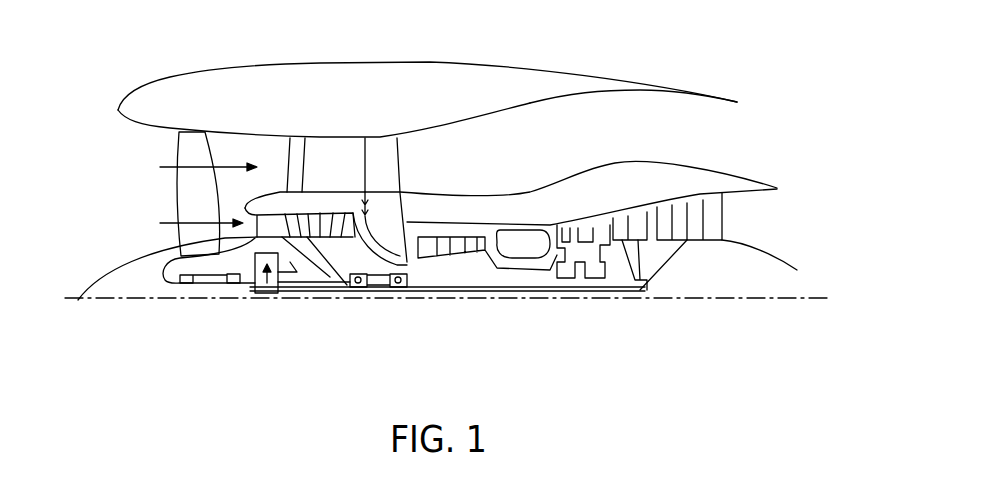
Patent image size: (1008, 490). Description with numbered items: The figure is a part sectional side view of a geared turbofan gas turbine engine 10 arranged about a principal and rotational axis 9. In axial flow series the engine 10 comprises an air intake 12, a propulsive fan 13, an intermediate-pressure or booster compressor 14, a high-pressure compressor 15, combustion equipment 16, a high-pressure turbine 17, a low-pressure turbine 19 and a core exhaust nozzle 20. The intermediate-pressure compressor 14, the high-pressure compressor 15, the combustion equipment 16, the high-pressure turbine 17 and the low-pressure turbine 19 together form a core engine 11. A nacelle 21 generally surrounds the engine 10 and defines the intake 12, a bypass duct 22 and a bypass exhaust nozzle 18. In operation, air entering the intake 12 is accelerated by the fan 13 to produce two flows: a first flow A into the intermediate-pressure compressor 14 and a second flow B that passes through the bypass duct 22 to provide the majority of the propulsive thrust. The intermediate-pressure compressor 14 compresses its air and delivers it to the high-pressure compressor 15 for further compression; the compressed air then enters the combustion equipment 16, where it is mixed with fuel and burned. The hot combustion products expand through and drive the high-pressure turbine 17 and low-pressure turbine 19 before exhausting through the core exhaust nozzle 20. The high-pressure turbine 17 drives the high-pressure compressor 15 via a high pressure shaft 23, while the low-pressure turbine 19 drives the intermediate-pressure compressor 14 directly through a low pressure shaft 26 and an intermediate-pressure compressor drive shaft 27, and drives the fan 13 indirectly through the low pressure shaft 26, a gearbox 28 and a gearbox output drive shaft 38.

The principal and rotational axis 9 is at (692, 300).
The geared turbofan gas turbine engine 10 is at (458, 70).
The core engine 11 is at (510, 215).
The air intake 12 is at (140, 135).
The propulsive fan 13 is at (190, 197).
The intermediate-pressure compressor 14 is at (328, 217).
The high-pressure compressor 15 is at (458, 243).
The combustion equipment 16 is at (530, 248).
The high-pressure turbine 17 is at (580, 232).
The bypass exhaust nozzle 18 is at (705, 121).
The low-pressure turbine 19 is at (697, 205).
The core exhaust nozzle 20 is at (760, 218).
The nacelle 21 is at (400, 78).
The bypass duct 22 is at (623, 139).
The high pressure shaft 23 is at (533, 275).
The low pressure shaft 26 is at (448, 292).
The intermediate-pressure compressor drive shaft 27 is at (320, 257).
The gearbox 28 is at (265, 295).
The gearbox output drive shaft 38 is at (203, 283).